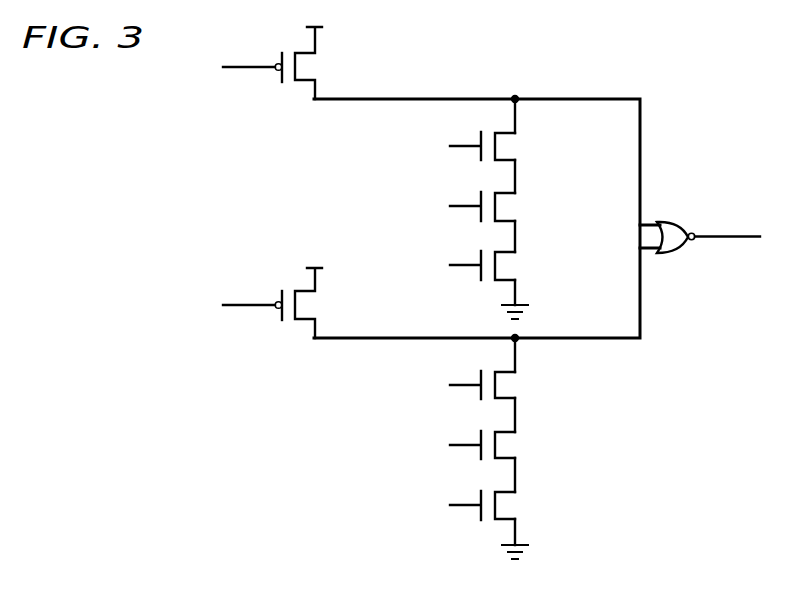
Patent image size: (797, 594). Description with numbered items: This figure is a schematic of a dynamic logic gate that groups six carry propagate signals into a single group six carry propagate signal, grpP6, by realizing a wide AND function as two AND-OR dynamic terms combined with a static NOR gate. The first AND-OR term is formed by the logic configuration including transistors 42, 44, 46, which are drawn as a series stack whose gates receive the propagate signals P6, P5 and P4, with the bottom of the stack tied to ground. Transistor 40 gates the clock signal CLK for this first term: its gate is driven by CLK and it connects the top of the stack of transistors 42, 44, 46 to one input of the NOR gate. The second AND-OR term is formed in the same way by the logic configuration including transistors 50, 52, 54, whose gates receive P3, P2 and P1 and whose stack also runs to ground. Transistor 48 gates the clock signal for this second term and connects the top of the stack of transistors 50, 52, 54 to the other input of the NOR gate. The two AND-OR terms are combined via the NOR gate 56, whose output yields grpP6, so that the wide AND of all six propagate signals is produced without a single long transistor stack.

The transistor 40 is at (304, 67).
The transistor 42 is at (504, 148).
The transistor 44 is at (504, 208).
The transistor 46 is at (504, 267).
The transistor 48 is at (304, 305).
The transistor 50 is at (504, 386).
The transistor 52 is at (504, 446).
The transistor 54 is at (504, 506).
The NOR gate 56 is at (676, 221).